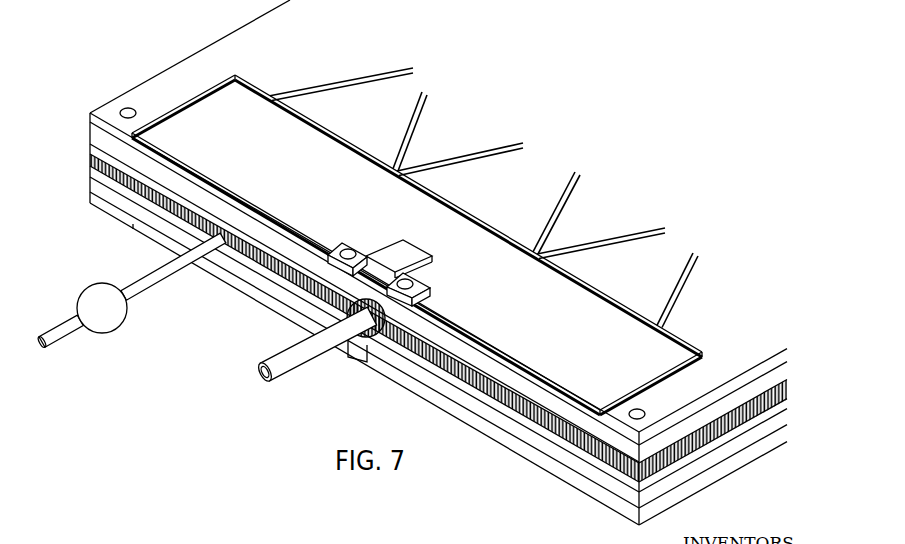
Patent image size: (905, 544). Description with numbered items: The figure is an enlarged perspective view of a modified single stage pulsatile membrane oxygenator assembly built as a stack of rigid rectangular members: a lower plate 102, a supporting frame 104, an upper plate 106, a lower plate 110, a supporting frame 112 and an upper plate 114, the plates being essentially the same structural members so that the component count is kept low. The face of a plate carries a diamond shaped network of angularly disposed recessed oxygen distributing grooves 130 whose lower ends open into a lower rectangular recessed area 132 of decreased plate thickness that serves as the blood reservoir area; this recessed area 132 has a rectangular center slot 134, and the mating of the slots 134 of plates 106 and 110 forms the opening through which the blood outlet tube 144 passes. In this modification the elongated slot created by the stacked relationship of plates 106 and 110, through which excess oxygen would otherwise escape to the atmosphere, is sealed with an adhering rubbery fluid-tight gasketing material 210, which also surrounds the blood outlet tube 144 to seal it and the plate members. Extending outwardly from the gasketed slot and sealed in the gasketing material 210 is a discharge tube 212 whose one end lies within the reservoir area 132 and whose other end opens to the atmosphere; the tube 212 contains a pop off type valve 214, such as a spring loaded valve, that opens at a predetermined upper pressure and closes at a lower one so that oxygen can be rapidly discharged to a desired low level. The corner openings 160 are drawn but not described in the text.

The lower plate 102 is at (90, 194).
The supporting frame 104 is at (90, 178).
The upper plate 106 is at (90, 161).
The lower plate 110 is at (90, 145).
The supporting frame 112 is at (90, 123).
The upper plate 114 is at (90, 114).
The oxygen distributing grooves 130 is at (566, 191).
The recessed area 132 is at (540, 320).
The center slot 134 is at (410, 265).
The blood outlet tube 144 is at (283, 361).
The hole 160 is at (130, 110).
The gasketing material 210 is at (578, 437).
The discharge tube 212 is at (147, 289).
The pop off type valve 214 is at (84, 296).